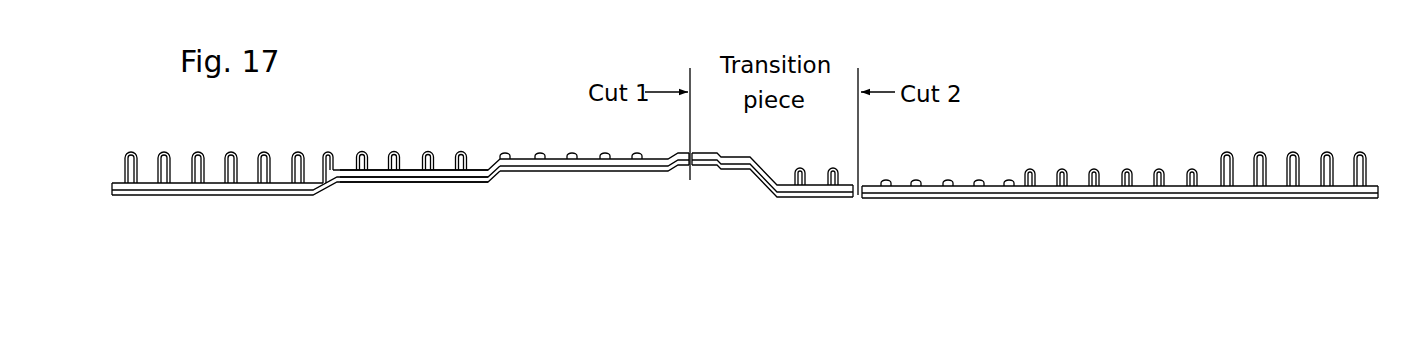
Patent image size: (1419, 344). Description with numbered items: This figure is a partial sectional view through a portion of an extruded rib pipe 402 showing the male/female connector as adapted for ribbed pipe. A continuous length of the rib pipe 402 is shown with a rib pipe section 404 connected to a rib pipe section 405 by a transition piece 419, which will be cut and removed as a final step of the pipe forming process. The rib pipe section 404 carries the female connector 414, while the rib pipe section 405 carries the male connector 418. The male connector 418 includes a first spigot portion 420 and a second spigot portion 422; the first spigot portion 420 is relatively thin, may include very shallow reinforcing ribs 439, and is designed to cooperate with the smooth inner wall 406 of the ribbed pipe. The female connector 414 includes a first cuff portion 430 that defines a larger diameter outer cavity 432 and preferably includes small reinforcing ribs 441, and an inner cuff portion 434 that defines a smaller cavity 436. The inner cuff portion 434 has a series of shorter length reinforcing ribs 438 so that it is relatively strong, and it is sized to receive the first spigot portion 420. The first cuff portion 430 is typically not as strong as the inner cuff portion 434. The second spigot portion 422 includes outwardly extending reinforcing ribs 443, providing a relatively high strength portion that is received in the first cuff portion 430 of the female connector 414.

The rib pipe 402 is at (1114, 156).
The rib pipe section 404 is at (296, 183).
The rib pipe section 405 is at (1228, 208).
The smooth inner wall 406 is at (183, 200).
The female connector 414 is at (592, 182).
The male connector 418 is at (1030, 215).
The transition piece 419 is at (748, 150).
The first spigot portion 420 is at (946, 202).
The second spigot portion 422 is at (1113, 148).
The first cuff portion 430 is at (594, 207).
The outer cavity 432 is at (573, 230).
The inner cuff portion 434 is at (425, 193).
The smaller cavity 436 is at (415, 214).
The reinforcing ribs 438 is at (460, 150).
The reinforcing ribs 439 is at (887, 182).
The reinforcing ribs 441 is at (539, 155).
The reinforcing ribs 443 is at (1062, 168).